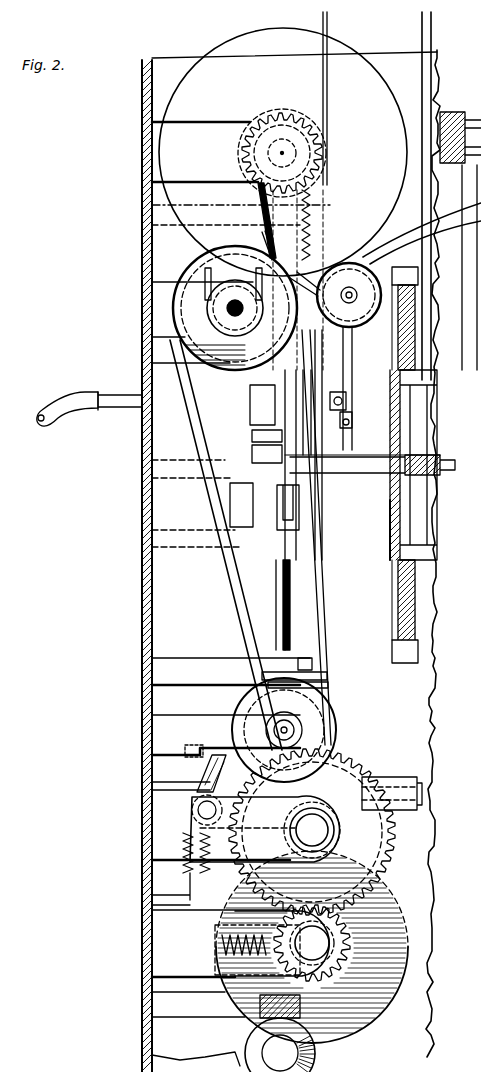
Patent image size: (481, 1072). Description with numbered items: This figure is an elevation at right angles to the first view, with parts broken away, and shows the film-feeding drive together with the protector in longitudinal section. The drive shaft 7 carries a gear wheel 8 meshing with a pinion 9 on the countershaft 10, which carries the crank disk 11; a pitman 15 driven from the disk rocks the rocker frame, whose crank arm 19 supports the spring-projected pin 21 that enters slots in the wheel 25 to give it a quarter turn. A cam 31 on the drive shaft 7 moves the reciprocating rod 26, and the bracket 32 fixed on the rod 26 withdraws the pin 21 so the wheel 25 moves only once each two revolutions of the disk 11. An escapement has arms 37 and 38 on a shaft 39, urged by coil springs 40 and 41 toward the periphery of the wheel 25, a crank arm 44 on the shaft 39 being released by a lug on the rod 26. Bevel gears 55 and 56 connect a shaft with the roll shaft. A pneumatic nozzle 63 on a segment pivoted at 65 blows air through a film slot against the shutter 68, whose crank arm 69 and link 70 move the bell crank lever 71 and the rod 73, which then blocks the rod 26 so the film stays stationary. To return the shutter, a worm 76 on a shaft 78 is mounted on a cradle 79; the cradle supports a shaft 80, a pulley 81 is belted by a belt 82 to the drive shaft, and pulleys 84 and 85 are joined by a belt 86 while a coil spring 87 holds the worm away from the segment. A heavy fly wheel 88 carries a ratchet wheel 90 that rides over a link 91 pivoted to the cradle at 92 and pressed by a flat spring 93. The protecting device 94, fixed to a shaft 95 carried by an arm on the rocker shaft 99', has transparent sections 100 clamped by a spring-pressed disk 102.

The fly wheel 88 is at (388, 105).
The ratchet wheel 90 is at (322, 153).
The rocker shaft 99' is at (460, 126).
The link 91 is at (264, 213).
The flat spring 93 is at (262, 234).
The pulley 81 is at (204, 268).
The pulley 85 is at (213, 293).
The shaft 80 is at (226, 310).
The pivot connection 92 is at (224, 355).
The shaft 78 is at (370, 318).
The belt 86 is at (348, 250).
The coil spring 87 is at (312, 238).
The worm 76 is at (366, 255).
The pulley 84 is at (375, 275).
The cradle 79 is at (334, 332).
The shutter 68 is at (313, 386).
The pivot 65 is at (348, 401).
The pneumatic nozzle 63 is at (353, 418).
The shaft 95 is at (440, 460).
The crank arm 69 is at (273, 440).
The link 70 is at (280, 452).
The bell crank lever 71 is at (272, 500).
The spring-pressed disk 102 is at (390, 500).
The rod 73 is at (283, 585).
The belt 82 is at (237, 605).
The transparent sections 100 is at (403, 607).
The protecting device 94 is at (418, 612).
The bracket 32 is at (306, 670).
The crank arm 19 is at (327, 677).
The pin 21 is at (328, 685).
The wheel 25 is at (342, 713).
The rod 26 is at (340, 735).
The pitman 15 is at (368, 768).
The crank arm 44 is at (236, 744).
The escapement arm 37 is at (203, 770).
The shaft 39 is at (194, 818).
The escapement arm 38 is at (258, 815).
The drive shaft 7 is at (343, 835).
The gear wheel 8 is at (380, 835).
The coil spring 40 is at (186, 870).
The coil spring 41 is at (199, 870).
The cam 31 is at (302, 922).
The crank disk 11 is at (388, 912).
The countershaft 10 is at (312, 943).
The pinion 9 is at (330, 975).
The bevel gear 55 is at (312, 1007).
The bevel gear 56 is at (318, 1058).